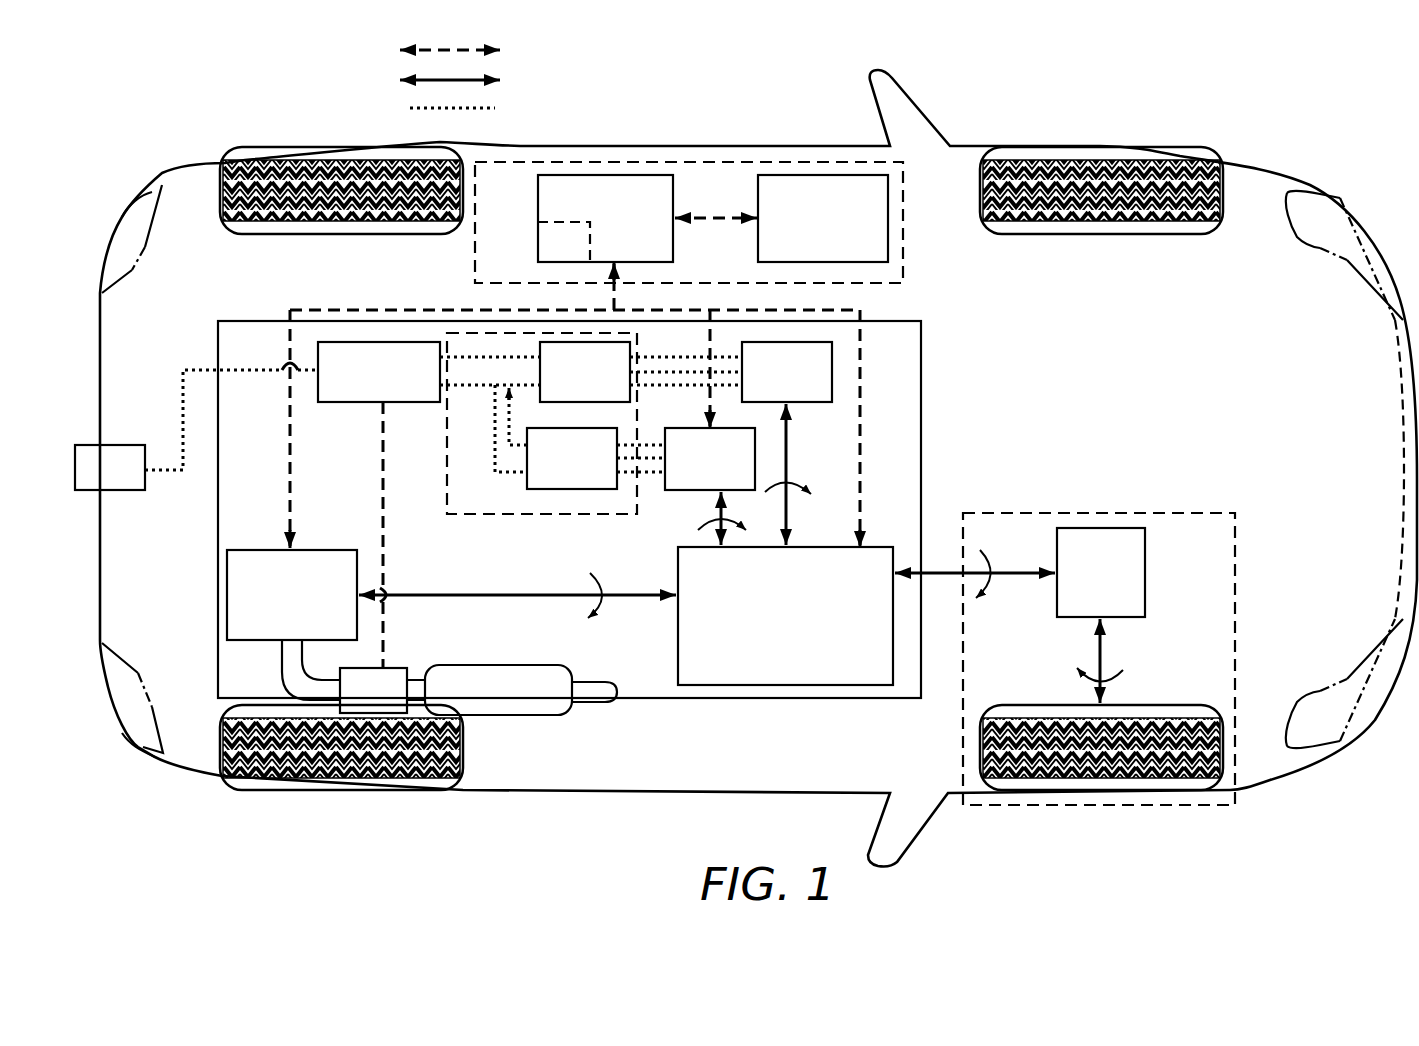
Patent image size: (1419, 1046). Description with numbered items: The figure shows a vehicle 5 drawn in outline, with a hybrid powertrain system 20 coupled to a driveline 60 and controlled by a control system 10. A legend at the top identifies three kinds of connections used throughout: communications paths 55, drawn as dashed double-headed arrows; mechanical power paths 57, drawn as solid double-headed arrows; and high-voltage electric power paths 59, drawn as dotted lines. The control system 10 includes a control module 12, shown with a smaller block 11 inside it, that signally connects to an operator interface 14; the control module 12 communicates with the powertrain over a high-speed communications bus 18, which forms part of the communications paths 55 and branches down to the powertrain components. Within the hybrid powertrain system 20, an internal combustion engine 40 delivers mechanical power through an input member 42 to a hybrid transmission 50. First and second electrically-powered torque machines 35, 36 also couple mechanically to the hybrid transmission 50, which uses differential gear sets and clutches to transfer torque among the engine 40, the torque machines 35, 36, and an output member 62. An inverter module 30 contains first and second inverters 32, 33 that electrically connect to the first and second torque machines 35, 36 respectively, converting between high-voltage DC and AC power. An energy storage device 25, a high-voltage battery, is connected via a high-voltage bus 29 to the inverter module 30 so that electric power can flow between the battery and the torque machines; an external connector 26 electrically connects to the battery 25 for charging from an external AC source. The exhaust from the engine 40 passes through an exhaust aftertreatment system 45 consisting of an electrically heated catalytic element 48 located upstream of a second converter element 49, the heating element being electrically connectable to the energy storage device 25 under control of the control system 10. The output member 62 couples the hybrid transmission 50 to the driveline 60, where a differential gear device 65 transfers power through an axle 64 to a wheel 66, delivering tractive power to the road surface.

The vehicle 5 is at (758, 468).
The control system 10 is at (689, 222).
The database 11 is at (564, 242).
The control module 12 is at (605, 218).
The operator interface 14 is at (823, 218).
The high-speed communications bus 18 is at (850, 304).
The hybrid powertrain system 20 is at (925, 416).
The energy storage device 25 is at (379, 505).
The external connector 26 is at (196, 426).
The high-voltage bus 29 is at (492, 418).
The inverter module 30 is at (542, 516).
The first inverter 32 is at (596, 458).
The second inverter 33 is at (591, 372).
The first electrically-powered torque machine 35 is at (710, 486).
The second electrically-powered torque machine 36 is at (787, 443).
The internal combustion engine 40 is at (292, 595).
The input member 42 is at (428, 598).
The exhaust aftertreatment system 45 is at (503, 730).
The electrically heated catalytic element 48 is at (373, 690).
The second converter element 49 is at (498, 690).
The hybrid transmission 50 is at (785, 616).
The communications paths 55 is at (469, 52).
The mechanical power paths 57 is at (469, 82).
The high-voltage electric power paths 59 is at (474, 110).
The driveline 60 is at (1101, 510).
The output member 62 is at (935, 573).
The axle 64 is at (1108, 660).
The differential gear device 65 is at (1101, 572).
The wheel 66 is at (1161, 704).